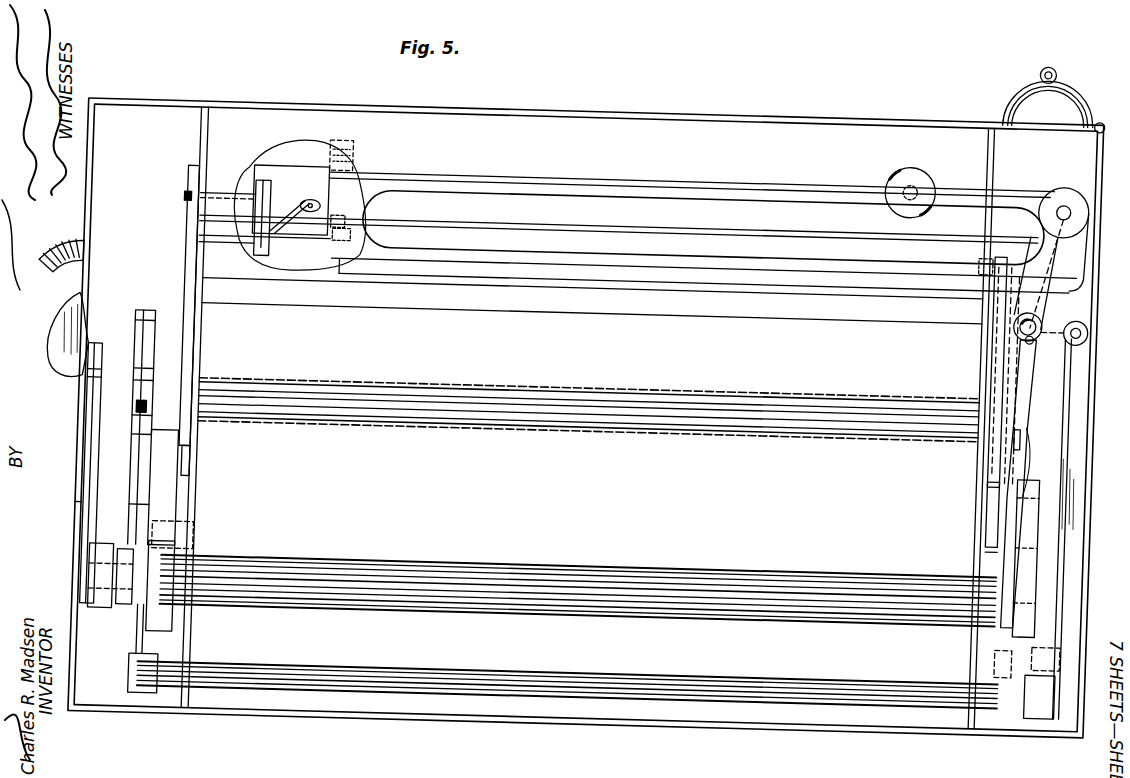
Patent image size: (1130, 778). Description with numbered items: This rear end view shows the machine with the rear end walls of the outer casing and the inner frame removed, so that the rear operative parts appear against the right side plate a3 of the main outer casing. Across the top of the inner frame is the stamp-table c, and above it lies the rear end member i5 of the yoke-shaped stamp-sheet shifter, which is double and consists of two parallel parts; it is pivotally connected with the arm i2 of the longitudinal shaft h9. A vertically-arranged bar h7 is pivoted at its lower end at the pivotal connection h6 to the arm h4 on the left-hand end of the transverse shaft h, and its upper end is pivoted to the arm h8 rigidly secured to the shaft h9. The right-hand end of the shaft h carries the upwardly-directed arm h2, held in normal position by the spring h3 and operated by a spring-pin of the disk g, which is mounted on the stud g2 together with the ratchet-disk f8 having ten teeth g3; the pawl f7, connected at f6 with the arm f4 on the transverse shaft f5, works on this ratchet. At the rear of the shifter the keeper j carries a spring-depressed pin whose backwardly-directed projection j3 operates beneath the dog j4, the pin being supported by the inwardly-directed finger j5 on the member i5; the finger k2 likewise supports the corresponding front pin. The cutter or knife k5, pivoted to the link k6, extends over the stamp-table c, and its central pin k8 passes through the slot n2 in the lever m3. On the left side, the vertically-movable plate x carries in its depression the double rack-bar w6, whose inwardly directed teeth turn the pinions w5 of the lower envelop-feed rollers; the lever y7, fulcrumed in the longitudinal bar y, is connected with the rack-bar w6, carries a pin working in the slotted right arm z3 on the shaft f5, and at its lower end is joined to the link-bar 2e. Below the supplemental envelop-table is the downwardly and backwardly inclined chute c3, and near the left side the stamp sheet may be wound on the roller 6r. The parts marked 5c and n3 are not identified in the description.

The pivotal connection h6 is at (1086, 660).
The dome cap 5c is at (1080, 78).
The arm h8 is at (1108, 98).
The roller 6r is at (910, 183).
The end member of stamp-sheet shifter i5 is at (708, 221).
The stamp-table c is at (638, 256).
The upwardly-directed arm h2 is at (133, 668).
The pin k8 is at (222, 186).
The cutter or knife k5 is at (291, 211).
The dog j4 is at (313, 190).
The link k6 is at (290, 207).
The keeper j is at (347, 131).
The backwardly-directed projection j3 is at (337, 216).
The inwardly-directed finger j5 is at (340, 230).
The slot n2 is at (191, 188).
The lever m3 is at (205, 214).
The finger k2 is at (1002, 240).
The arm i2 is at (1039, 274).
The double rack-bar w6 is at (1024, 302).
The shaft h9 is at (1042, 318).
The vertically-movable plate x is at (1003, 344).
The bar y is at (1002, 436).
The vertically-arranged bar h7 is at (1040, 378).
The lever y7 is at (1034, 404).
The right arm z3 is at (1050, 496).
The arm h4 is at (1003, 524).
The link-bar 2e is at (1016, 628).
The chute c3 is at (590, 375).
The shaft f5 is at (578, 581).
The shaft h is at (567, 675).
The brush n3 is at (62, 249).
The arm f4 is at (114, 349).
The pawl connection f6 is at (160, 380).
The pawl f7 is at (160, 416).
The teeth g3 is at (160, 478).
The ratchet-disk f8 is at (160, 502).
The spring h3 is at (206, 466).
The right side plate or wall a3 is at (92, 500).
The stud g2 is at (196, 536).
The disk g is at (160, 586).
The pinions w5 is at (122, 604).